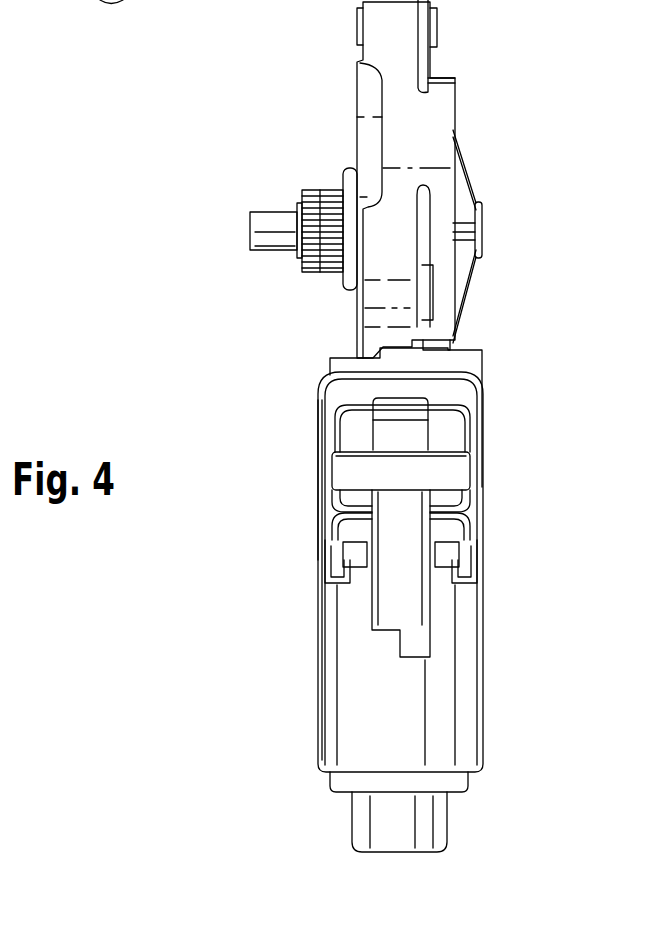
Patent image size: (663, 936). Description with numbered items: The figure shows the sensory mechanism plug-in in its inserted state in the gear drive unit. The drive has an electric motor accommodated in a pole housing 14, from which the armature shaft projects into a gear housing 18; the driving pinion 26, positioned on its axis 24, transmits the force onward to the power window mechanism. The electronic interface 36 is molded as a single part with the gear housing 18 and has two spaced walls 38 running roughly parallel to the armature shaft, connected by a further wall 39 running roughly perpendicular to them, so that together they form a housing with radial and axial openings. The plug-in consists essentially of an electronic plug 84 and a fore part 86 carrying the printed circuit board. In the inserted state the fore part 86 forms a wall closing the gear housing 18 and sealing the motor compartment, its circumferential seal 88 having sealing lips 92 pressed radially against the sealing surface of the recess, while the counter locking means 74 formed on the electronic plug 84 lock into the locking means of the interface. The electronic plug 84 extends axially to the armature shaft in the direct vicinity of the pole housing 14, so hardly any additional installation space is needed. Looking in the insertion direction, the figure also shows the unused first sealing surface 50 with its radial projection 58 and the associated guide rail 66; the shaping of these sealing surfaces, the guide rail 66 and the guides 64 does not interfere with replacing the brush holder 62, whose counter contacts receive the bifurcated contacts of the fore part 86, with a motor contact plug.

The pole housing 14 is at (367, 730).
The gear housing 18 is at (378, 293).
The axis 24 is at (277, 238).
The driving pinion 26 is at (327, 205).
The electronic interface 36 is at (492, 424).
The walls 38 is at (323, 422).
The wall 39 is at (410, 375).
The first sealing surface 50 is at (327, 563).
The radial projection 58 is at (476, 530).
The brush holder 62 is at (352, 540).
The guides 64 is at (457, 567).
The guide rail 66 is at (457, 552).
The counter locking means 74 is at (478, 468).
The electronic plug 84 is at (390, 610).
The fore part 86 is at (353, 433).
The seal 88 is at (470, 410).
The sealing lips 92 is at (402, 458).